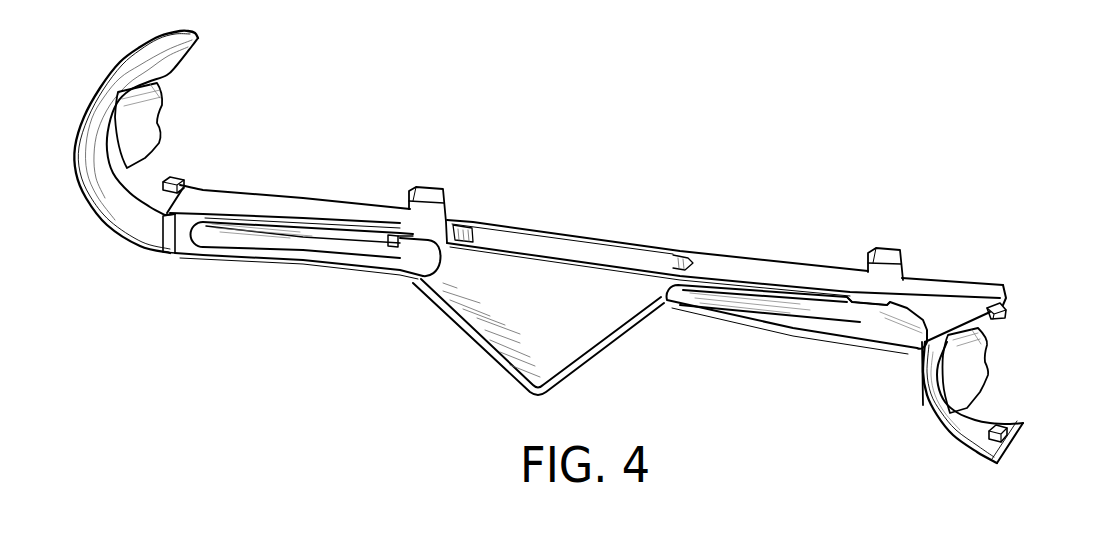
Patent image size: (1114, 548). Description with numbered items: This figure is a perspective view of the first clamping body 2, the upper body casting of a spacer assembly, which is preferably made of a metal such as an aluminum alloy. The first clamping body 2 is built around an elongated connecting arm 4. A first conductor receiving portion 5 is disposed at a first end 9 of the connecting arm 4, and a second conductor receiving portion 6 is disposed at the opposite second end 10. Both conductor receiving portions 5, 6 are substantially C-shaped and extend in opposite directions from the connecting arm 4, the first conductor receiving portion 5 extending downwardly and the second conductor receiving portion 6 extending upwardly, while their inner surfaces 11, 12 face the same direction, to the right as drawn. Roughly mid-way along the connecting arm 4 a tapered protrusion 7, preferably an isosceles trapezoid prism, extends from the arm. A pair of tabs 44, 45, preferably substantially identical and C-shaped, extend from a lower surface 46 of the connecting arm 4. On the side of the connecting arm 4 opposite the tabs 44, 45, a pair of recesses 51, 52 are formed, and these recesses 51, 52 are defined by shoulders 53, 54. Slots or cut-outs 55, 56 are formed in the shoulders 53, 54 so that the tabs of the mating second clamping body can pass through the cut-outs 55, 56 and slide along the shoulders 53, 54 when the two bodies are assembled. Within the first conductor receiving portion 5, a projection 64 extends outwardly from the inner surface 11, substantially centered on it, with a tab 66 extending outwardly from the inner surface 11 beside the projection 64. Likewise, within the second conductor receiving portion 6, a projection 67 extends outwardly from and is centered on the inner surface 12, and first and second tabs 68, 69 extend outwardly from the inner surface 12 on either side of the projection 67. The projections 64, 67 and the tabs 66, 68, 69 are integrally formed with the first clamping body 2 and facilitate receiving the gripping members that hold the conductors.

The first clamping body 2 is at (740, 250).
The connecting arm 4 is at (347, 197).
The first conductor receiving portion 5 is at (100, 77).
The second conductor receiving portion 6 is at (943, 442).
The tapered protrusion 7 is at (570, 377).
The first end 9 is at (100, 173).
The second end 10 is at (1007, 450).
The inner surface 11 is at (160, 165).
The inner surface 12 is at (985, 413).
The tab 44 is at (430, 190).
The tab 45 is at (890, 250).
The lower surface 46 is at (283, 197).
The recess 51 is at (237, 230).
The recess 52 is at (797, 303).
The shoulder 53 is at (290, 263).
The shoulder 54 is at (873, 347).
The cut-out 55 is at (410, 243).
The cut-out 56 is at (860, 303).
The projection 64 is at (157, 120).
The second tab 66 is at (183, 175).
The projection 67 is at (987, 340).
The first tab 68 is at (997, 443).
The second tab 69 is at (1000, 310).